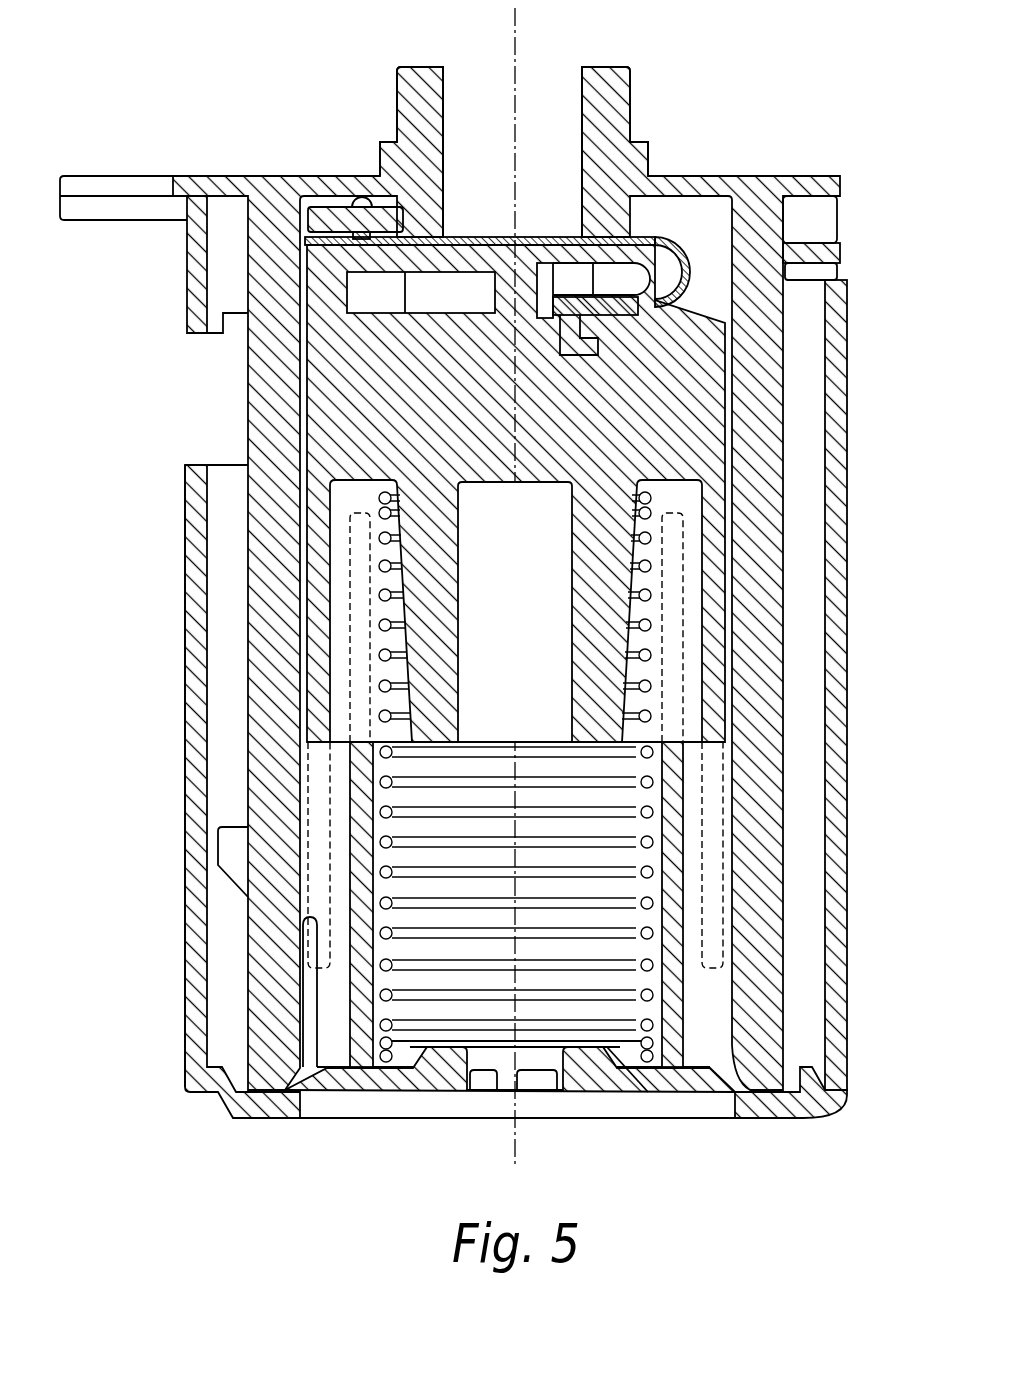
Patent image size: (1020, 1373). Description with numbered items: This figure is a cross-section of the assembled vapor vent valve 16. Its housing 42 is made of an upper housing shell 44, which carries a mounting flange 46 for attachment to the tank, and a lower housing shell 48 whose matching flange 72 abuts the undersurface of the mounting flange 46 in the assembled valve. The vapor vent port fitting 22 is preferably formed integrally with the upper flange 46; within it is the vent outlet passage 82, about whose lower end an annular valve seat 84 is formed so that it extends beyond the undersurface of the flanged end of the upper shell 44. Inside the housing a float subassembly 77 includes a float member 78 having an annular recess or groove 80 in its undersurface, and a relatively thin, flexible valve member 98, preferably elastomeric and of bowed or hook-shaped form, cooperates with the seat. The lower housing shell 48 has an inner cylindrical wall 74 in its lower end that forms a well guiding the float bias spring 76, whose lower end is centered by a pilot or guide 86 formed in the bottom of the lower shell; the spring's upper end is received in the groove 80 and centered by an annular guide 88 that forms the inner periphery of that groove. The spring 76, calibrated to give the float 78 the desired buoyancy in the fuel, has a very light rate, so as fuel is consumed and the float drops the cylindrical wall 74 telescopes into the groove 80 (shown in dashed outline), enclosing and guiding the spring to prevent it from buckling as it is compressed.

The vapor vent valve 16 is at (853, 158).
The vapor vent port fitting 22 is at (392, 140).
The housing 42 is at (152, 770).
The upper housing shell 44 is at (226, 315).
The mounting flange 46 is at (213, 176).
The lower housing shell 48 is at (186, 964).
The matching flange 72 is at (112, 220).
The inner cylindrical wall 74 is at (688, 1000).
The float bias spring 76 is at (652, 628).
The float subassembly 77 is at (683, 218).
The float member 78 is at (728, 432).
The annular recess or groove 80 is at (372, 480).
The vent outlet passage 82 is at (560, 98).
The annular valve seat 84 is at (642, 258).
The pilot or guide 86 is at (645, 1032).
The annular guide 88 is at (645, 585).
The valve member 98 is at (480, 237).